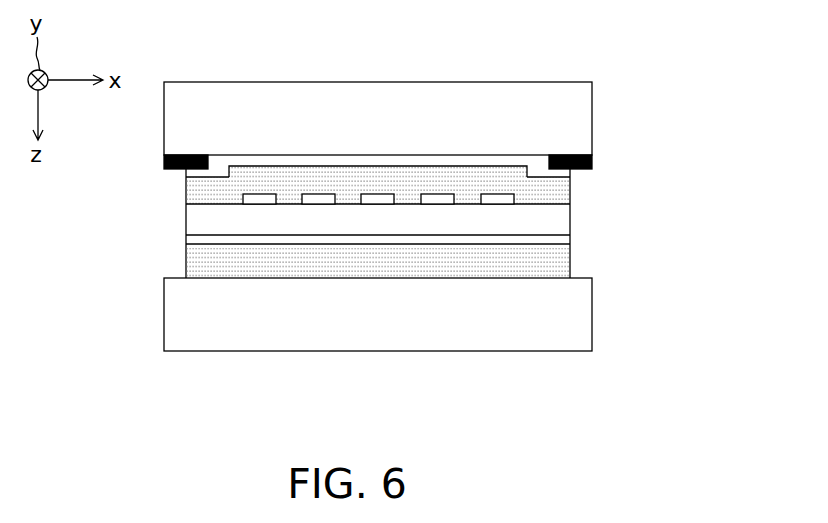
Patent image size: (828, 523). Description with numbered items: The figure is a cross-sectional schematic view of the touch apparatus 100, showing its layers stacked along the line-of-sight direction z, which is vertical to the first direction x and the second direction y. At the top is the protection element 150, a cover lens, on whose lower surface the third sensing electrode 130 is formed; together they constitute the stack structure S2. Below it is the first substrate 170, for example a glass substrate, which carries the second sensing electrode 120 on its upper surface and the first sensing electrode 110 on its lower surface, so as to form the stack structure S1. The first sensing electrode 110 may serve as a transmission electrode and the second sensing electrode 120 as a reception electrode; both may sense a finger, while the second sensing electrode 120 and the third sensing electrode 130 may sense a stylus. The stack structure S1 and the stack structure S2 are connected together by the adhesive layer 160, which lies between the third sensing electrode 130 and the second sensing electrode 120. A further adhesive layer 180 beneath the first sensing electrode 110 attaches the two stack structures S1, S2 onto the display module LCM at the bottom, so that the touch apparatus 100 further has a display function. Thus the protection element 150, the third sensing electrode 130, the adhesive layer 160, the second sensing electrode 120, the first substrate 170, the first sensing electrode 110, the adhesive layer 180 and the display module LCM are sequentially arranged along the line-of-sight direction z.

The touch apparatus 100 is at (703, 393).
The first sensing electrode 110 is at (559, 241).
The second sensing electrode 120 is at (514, 200).
The third sensing electrode 130 is at (562, 175).
The protection element 150 is at (580, 117).
The adhesive layer 160 is at (188, 195).
The first substrate 170 is at (559, 216).
The adhesive layer 180 is at (195, 267).
The display module LCM is at (580, 316).
The stack structure S1 is at (661, 190).
The stack structure S2 is at (661, 100).